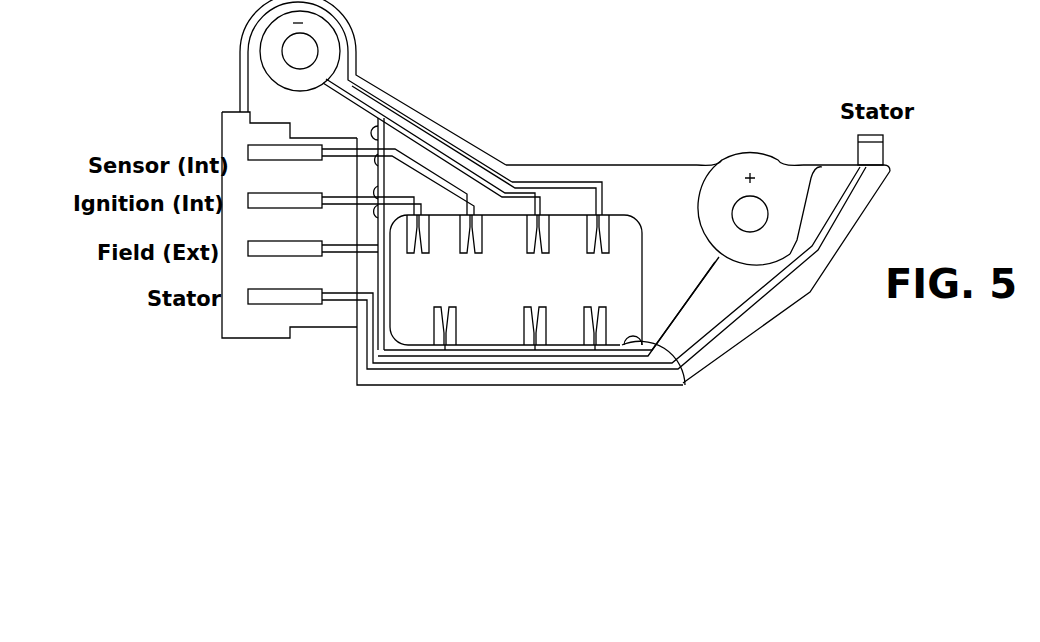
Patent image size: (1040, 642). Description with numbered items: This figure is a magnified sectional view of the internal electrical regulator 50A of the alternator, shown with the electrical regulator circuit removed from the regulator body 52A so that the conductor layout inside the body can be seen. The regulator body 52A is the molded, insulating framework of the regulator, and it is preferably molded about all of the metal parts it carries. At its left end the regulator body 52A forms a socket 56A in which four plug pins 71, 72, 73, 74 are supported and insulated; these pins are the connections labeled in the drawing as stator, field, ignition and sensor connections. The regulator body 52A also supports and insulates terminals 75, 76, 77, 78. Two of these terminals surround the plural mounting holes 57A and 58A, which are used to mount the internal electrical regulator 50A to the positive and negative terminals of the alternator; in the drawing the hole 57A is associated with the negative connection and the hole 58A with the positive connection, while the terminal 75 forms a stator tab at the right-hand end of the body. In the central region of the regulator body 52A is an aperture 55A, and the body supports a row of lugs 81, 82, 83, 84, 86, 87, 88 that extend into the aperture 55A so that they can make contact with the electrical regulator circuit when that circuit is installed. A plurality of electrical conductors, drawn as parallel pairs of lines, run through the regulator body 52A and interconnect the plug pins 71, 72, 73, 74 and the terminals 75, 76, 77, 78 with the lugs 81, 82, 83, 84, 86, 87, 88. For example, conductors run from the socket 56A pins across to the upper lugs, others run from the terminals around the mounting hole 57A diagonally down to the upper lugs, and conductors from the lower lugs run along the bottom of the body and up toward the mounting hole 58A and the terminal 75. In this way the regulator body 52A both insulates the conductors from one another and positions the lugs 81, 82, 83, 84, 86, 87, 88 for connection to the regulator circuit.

The internal electrical regulator 50A is at (540, 86).
The regulator body 52A is at (757, 332).
The aperture 55A is at (682, 377).
The socket 56A is at (257, 328).
The mounting hole 57A is at (285, 47).
The mounting hole 58A is at (742, 205).
The plug pin 71 is at (257, 296).
The plug pin 72 is at (257, 248).
The plug pin 73 is at (257, 200).
The plug pin 74 is at (257, 153).
The terminal 75 is at (877, 157).
The terminal 76 is at (352, 33).
The terminal 77 is at (770, 185).
The terminal 78 is at (280, 72).
The lug 81 is at (543, 340).
The lug 82 is at (438, 340).
The lug 83 is at (425, 213).
The lug 84 is at (473, 213).
The lug 86 is at (608, 213).
The lug 87 is at (588, 348).
The lug 88 is at (541, 213).